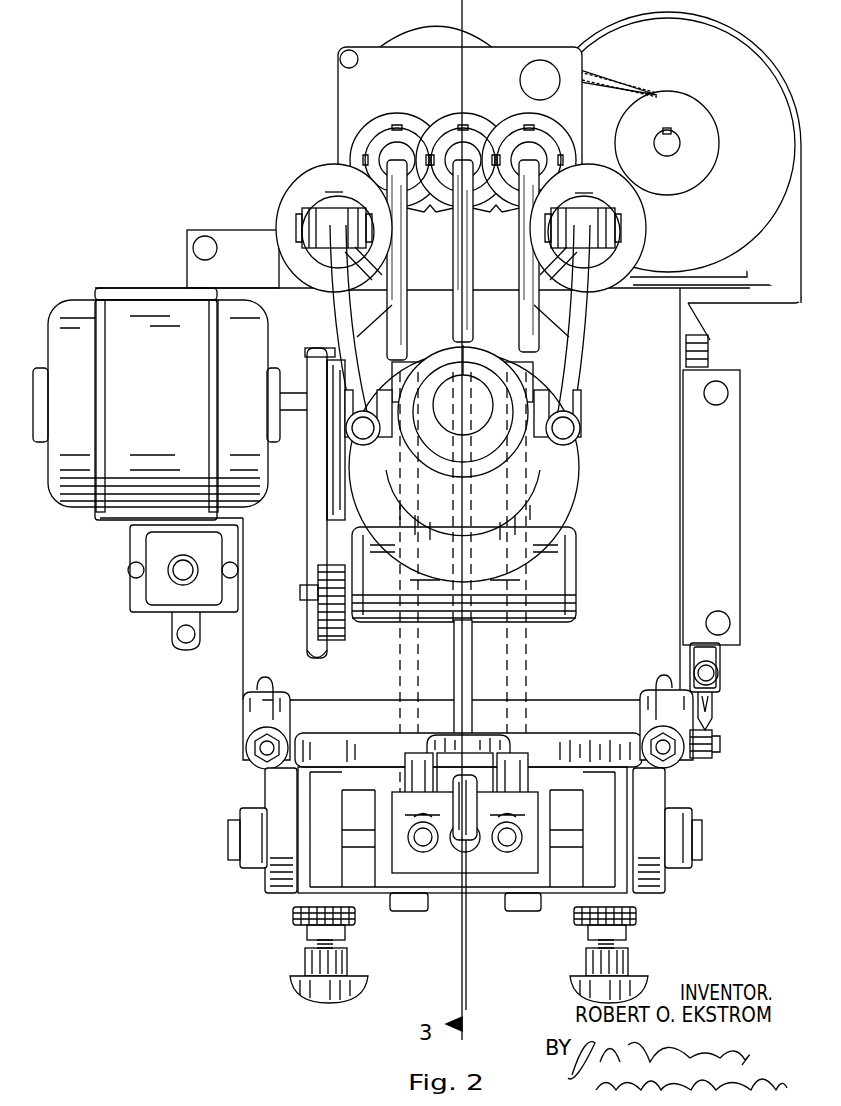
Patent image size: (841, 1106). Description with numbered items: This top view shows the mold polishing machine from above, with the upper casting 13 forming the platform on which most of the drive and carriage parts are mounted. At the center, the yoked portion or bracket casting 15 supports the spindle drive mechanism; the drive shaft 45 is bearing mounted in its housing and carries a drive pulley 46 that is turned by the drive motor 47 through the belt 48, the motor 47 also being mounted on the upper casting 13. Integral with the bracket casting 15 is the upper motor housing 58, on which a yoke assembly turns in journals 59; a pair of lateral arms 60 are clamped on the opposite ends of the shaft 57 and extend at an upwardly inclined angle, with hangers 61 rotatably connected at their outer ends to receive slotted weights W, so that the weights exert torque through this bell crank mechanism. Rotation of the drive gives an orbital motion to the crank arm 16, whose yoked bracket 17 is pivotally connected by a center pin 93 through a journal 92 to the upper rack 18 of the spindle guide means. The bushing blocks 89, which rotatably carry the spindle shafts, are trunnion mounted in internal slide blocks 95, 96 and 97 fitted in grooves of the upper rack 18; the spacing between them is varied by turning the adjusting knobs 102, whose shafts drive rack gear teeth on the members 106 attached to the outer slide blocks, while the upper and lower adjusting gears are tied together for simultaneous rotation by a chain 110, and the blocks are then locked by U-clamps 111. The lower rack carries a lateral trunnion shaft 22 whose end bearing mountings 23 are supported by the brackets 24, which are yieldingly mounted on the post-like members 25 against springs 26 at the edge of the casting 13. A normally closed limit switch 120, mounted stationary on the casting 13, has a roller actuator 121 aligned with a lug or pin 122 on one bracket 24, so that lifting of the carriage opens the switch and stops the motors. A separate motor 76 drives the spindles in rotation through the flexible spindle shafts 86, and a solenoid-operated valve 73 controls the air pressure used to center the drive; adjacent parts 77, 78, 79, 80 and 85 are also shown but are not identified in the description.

The upper casting 13 is at (642, 586).
The yoked portion of bracket casting 15 is at (560, 520).
The crank arm 16 is at (490, 674).
The yoked bracket 17 is at (420, 800).
The upper rack 18 is at (566, 918).
The lateral trunnion shaft 22 is at (238, 840).
The end bearing mountings 23 is at (262, 882).
The trunnion bracket 24 is at (276, 895).
The post-like members 25 is at (252, 716).
The springs 26 is at (250, 766).
The drive shaft 45 is at (316, 593).
The drive pulley 46 is at (340, 654).
The drive motor 47 is at (169, 411).
The belt 48 is at (312, 492).
The shaft 57 is at (353, 452).
The upper motor housing 58 is at (540, 456).
The journals 59 is at (392, 446).
The lateral arms 60 is at (345, 324).
The hangers 61 is at (382, 204).
The solenoid-operated valve 73 is at (182, 602).
The motor 76 is at (706, 65).
The pulley 77 is at (717, 112).
The drive belt 78 is at (607, 58).
The belt 79 is at (427, 30).
The plate 80 is at (444, 91).
The gear housing 85 is at (466, 130).
The flexible spindle shafts 86 is at (413, 305).
The spindle bushings 89 is at (465, 832).
The journal 92 is at (494, 784).
The center pin 93 is at (520, 740).
The slide block 95 is at (386, 877).
The slide block 96 is at (475, 885).
The slide block 97 is at (580, 876).
The adjusting knobs 102 is at (300, 995).
The rack gear member 106 is at (470, 837).
The chain 110 is at (294, 918).
The U-clamps 111 is at (410, 912).
The limit switch 120 is at (716, 688).
The roller actuator 121 is at (712, 734).
The lug or pin 122 is at (722, 748).